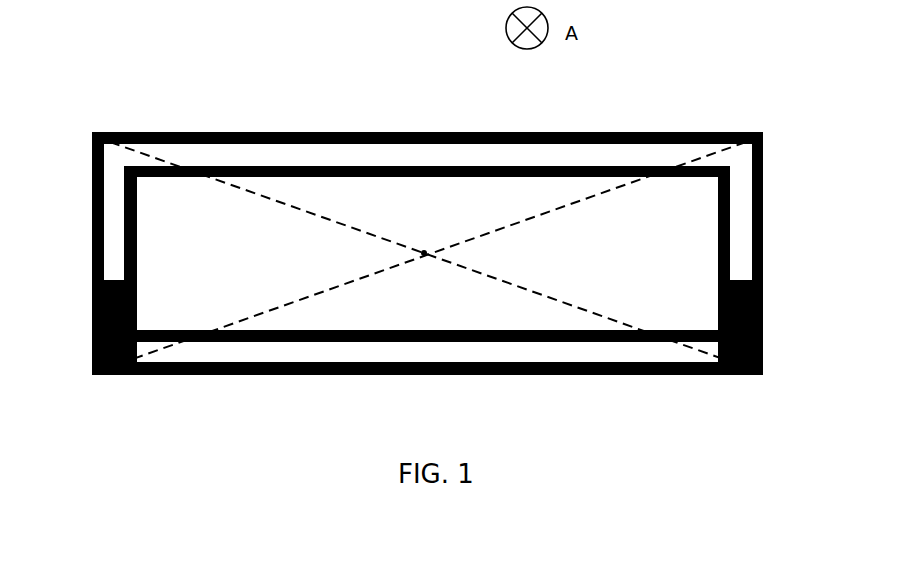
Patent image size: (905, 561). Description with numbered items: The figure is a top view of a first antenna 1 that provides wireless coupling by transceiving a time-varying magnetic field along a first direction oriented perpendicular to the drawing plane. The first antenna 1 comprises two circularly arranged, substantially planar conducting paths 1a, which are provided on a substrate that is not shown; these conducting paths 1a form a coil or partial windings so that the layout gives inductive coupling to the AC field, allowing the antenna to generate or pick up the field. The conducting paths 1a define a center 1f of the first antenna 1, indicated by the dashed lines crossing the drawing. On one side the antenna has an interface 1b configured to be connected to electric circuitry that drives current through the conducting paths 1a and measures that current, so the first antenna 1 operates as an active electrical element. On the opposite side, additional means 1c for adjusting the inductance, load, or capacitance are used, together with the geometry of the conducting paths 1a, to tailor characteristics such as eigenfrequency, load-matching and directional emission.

The first antenna 1 is at (425, 214).
The conducting paths 1a is at (197, 132).
The interface 1b is at (92, 325).
The additional means for adjusting the inductance and/or the load and/or the capacit 1c is at (763, 325).
The center 1f is at (424, 253).